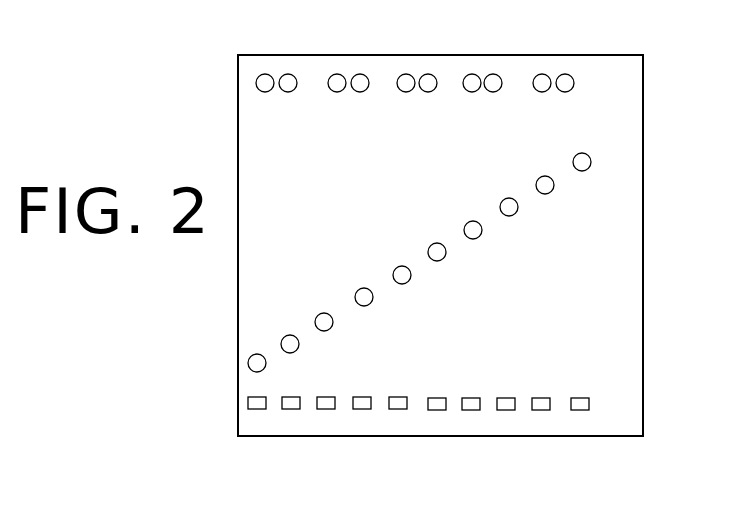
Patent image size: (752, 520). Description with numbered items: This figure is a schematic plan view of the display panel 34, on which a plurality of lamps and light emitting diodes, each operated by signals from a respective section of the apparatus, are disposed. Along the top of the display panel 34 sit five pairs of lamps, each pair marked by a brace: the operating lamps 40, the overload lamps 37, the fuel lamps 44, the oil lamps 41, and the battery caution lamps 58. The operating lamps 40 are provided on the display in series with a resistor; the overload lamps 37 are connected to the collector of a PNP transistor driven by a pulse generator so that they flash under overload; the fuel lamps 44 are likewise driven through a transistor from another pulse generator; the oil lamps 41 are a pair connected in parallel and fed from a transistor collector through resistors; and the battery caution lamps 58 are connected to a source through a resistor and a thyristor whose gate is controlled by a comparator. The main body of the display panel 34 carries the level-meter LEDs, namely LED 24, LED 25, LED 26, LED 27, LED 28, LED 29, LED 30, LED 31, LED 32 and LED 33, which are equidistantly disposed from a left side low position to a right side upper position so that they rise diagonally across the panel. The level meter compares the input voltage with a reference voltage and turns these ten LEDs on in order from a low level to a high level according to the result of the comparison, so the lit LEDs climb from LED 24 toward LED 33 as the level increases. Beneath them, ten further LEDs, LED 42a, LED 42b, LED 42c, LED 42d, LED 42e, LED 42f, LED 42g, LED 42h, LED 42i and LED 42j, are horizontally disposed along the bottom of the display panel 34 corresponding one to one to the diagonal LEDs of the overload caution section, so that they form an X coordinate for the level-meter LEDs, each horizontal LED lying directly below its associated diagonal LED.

The display panel 34 is at (643, 178).
The operating lamps 40 is at (304, 96).
The overload lamps 37 is at (378, 96).
The fuel lamps 44 is at (444, 96).
The oil lamps 41 is at (514, 96).
The battery caution lamps 58 is at (527, 96).
The LED 24 is at (248, 358).
The LED 25 is at (286, 335).
The LED 26 is at (333, 326).
The LED 27 is at (360, 288).
The LED 28 is at (410, 279).
The LED 29 is at (433, 244).
The LED 30 is at (481, 235).
The LED 31 is at (503, 199).
The LED 32 is at (552, 191).
The LED 33 is at (589, 155).
The LED 42a is at (248, 404).
The LED 42b is at (290, 410).
The LED 42c is at (326, 396).
The LED 42d is at (362, 410).
The LED 42e is at (398, 396).
The LED 42f is at (437, 411).
The LED 42g is at (471, 397).
The LED 42h is at (506, 411).
The LED 42i is at (541, 397).
The LED 42j is at (580, 411).